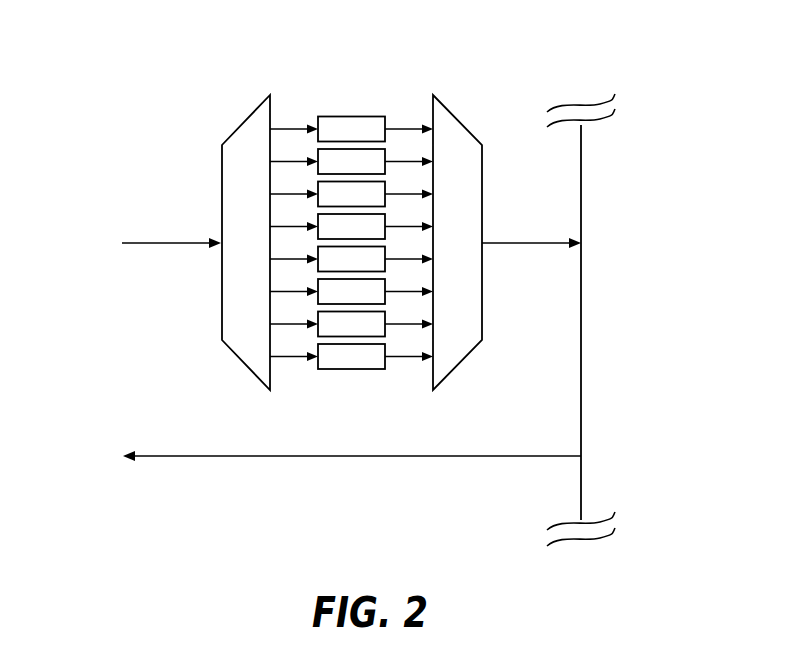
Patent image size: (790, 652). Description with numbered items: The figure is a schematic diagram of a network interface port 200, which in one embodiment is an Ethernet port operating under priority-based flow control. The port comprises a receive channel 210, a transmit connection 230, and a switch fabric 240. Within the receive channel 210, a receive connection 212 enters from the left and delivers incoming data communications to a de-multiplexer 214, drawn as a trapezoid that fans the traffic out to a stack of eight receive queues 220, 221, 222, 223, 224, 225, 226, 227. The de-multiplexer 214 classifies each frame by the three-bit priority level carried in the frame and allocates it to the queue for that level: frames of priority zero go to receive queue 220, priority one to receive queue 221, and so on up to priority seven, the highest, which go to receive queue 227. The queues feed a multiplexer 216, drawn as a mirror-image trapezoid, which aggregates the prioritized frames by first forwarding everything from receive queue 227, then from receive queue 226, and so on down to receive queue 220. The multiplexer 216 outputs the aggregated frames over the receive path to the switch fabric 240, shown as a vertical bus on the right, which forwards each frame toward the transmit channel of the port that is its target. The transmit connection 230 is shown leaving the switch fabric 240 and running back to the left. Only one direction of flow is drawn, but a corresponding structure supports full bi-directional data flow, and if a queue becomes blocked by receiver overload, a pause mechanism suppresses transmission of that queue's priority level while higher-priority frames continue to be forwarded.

The network interface port 200 is at (137, 579).
The receive channel 210 is at (152, 58).
The receive connection 212 is at (158, 241).
The de-multiplexer 214 is at (246, 242).
The multiplexer 216 is at (457, 242).
The receive queue 220 is at (351, 129).
The receive queue 221 is at (351, 161).
The receive queue 222 is at (351, 194).
The receive queue 223 is at (351, 226).
The receive queue 224 is at (351, 259).
The receive queue 225 is at (351, 291).
The receive queue 226 is at (351, 324).
The receive queue 227 is at (351, 356).
The transmit connection 230 is at (170, 453).
The switch fabric 240 is at (672, 201).